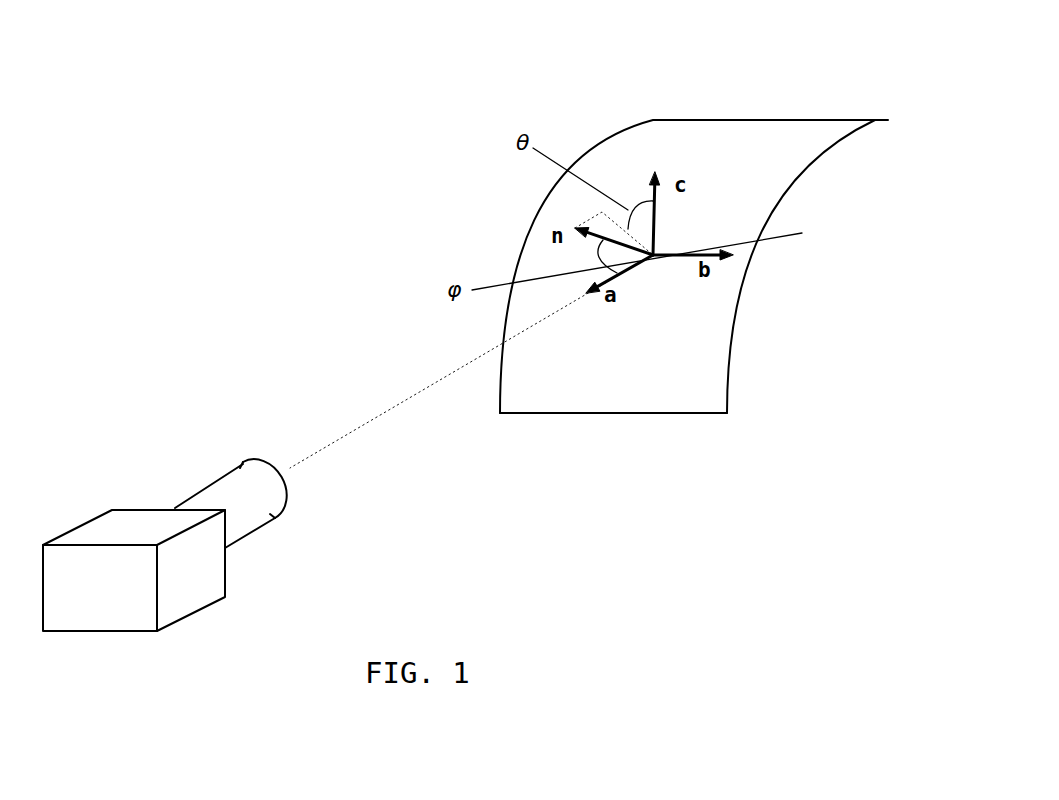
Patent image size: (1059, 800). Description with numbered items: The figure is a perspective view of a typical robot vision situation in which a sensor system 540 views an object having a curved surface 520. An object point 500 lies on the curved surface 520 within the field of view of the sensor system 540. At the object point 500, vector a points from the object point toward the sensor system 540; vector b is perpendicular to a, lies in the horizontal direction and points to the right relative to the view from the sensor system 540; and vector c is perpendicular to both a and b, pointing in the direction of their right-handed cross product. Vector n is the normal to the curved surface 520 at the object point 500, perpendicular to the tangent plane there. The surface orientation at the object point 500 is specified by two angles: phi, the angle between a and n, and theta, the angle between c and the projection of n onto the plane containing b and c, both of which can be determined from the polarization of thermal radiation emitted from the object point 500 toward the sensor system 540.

The object point 500 is at (664, 259).
The curved surface 520 is at (748, 138).
The sensor system 540 is at (215, 583).